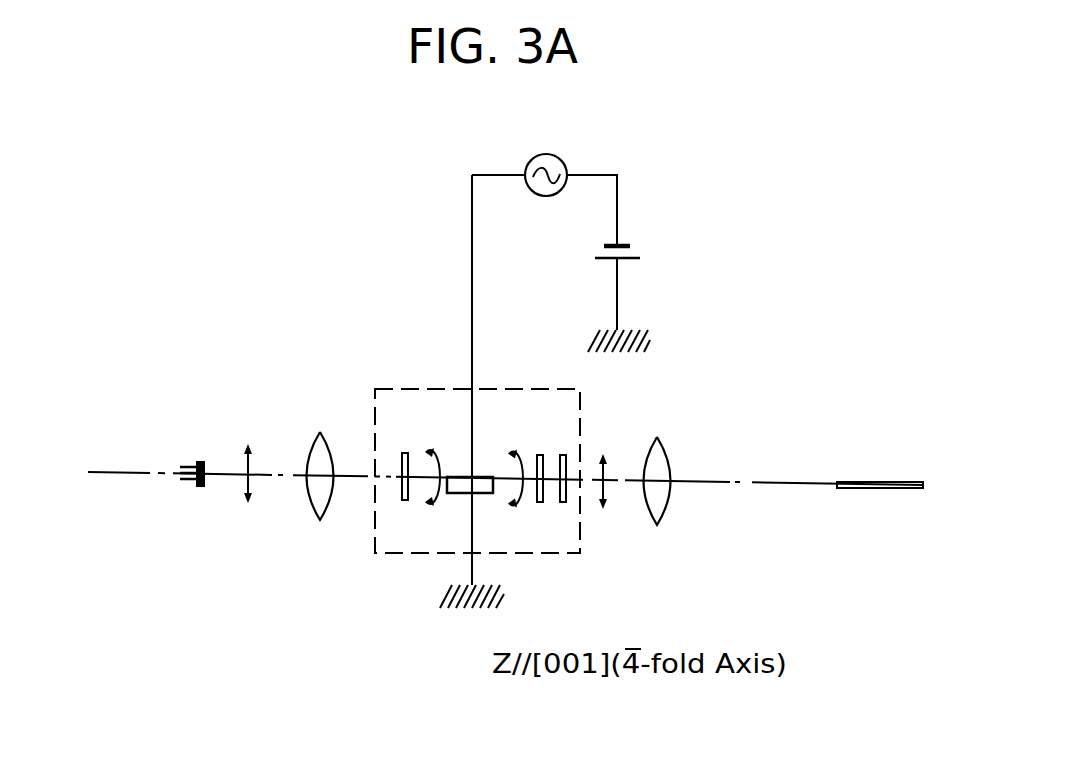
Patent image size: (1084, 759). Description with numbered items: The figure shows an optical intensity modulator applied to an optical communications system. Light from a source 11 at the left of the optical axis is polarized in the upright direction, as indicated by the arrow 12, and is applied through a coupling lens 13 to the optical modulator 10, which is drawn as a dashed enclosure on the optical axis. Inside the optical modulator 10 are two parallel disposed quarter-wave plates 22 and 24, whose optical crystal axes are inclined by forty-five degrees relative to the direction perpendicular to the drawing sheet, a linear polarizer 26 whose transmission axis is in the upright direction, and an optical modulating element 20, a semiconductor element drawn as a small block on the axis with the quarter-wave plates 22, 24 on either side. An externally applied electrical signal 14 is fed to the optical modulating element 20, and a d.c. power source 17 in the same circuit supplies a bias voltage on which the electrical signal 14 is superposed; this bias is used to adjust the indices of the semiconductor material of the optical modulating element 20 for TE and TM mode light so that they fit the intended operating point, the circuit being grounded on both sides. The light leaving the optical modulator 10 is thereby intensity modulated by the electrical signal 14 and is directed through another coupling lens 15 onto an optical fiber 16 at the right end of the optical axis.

The optical modulator 10 is at (403, 552).
The semiconductor laser light source 11 is at (201, 461).
The arrow 12 is at (245, 483).
The coupling lens 13 is at (318, 433).
The electrical signal 14 is at (531, 194).
The coupling lens 15 is at (660, 505).
The optical fiber 16 is at (870, 481).
The d.c. power source 17 is at (636, 248).
The optical modulating element 20 is at (488, 493).
The quarter-wave plate 22 is at (405, 452).
The quarter-wave plate 24 is at (540, 453).
The linear polarizer 26 is at (563, 453).